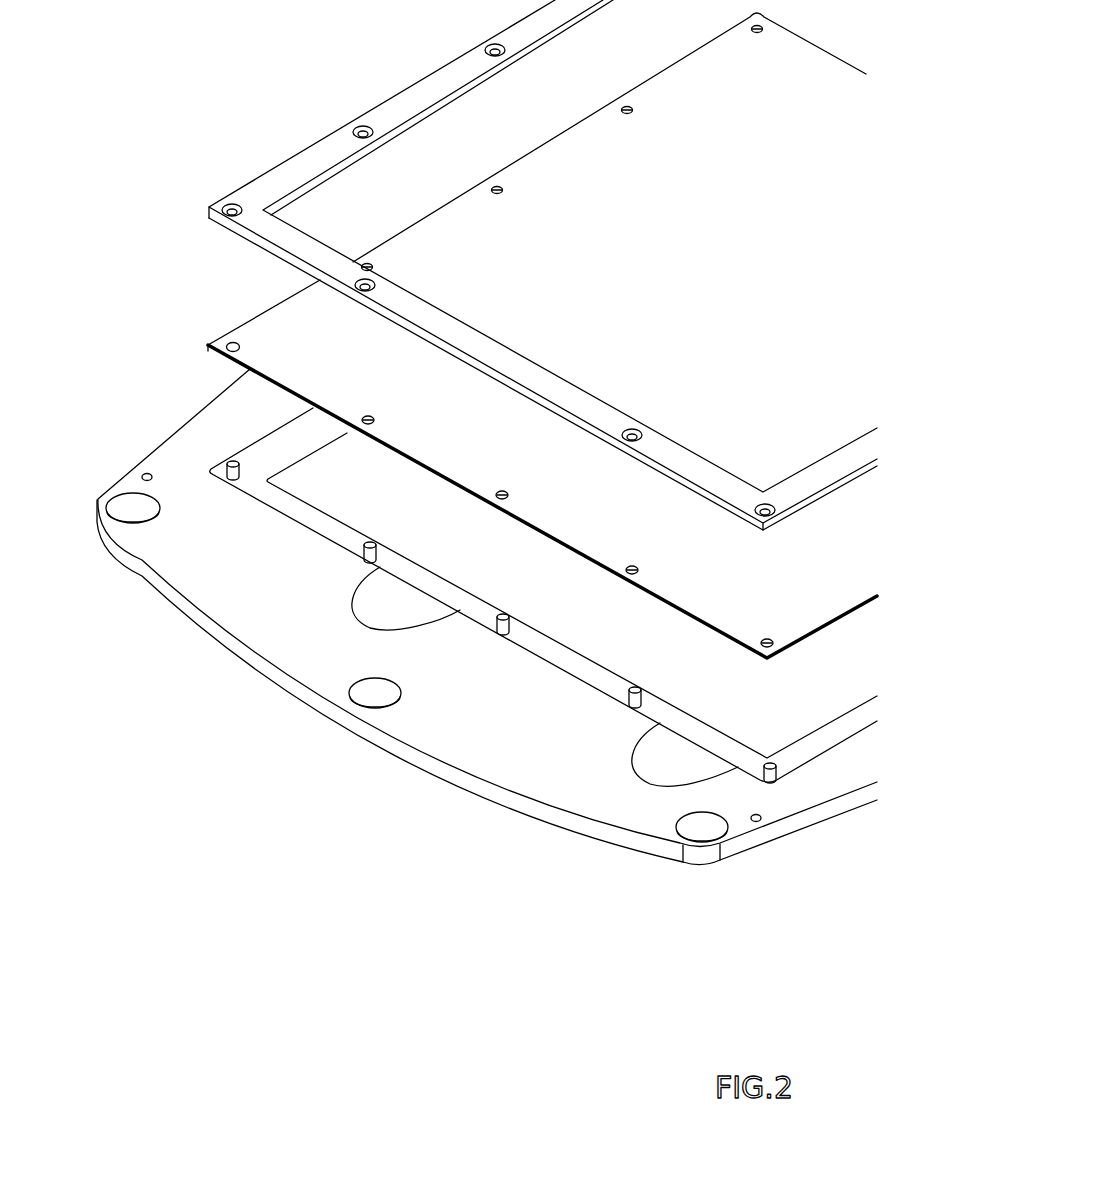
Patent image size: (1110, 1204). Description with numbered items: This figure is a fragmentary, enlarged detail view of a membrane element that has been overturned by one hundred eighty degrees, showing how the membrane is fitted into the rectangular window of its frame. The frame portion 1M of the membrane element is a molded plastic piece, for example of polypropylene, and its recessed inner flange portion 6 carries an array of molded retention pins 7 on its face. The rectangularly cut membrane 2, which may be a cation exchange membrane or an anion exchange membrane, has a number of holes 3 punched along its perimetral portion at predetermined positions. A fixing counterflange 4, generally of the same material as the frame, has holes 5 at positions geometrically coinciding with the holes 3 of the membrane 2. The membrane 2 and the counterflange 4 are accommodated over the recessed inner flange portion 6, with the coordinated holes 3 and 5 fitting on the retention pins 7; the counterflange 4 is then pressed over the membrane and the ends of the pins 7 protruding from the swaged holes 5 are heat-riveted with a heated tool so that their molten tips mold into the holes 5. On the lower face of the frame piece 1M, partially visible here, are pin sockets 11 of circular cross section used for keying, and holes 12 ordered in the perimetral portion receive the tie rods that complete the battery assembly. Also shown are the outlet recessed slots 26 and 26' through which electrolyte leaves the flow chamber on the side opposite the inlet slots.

The frame portion of membrane element 1M is at (318, 676).
The membrane 2 is at (290, 310).
The holes 3 is at (625, 108).
The fixing counterflange 4 is at (292, 173).
The holes 5 is at (490, 50).
The recessed inner flange portion 6 is at (400, 567).
The retention pins 7 is at (240, 470).
The pin sockets 11 is at (147, 474).
The holes 12 is at (131, 510).
The outlet recessed slot 26 is at (304, 635).
The outlet recessed slot 26' is at (580, 788).